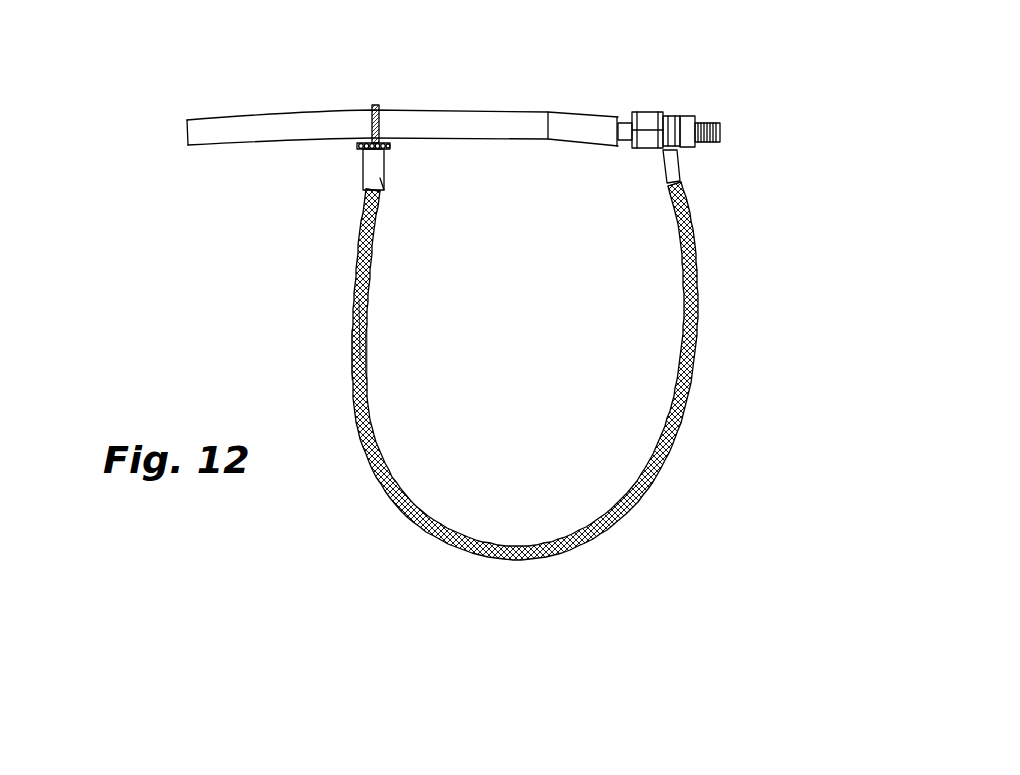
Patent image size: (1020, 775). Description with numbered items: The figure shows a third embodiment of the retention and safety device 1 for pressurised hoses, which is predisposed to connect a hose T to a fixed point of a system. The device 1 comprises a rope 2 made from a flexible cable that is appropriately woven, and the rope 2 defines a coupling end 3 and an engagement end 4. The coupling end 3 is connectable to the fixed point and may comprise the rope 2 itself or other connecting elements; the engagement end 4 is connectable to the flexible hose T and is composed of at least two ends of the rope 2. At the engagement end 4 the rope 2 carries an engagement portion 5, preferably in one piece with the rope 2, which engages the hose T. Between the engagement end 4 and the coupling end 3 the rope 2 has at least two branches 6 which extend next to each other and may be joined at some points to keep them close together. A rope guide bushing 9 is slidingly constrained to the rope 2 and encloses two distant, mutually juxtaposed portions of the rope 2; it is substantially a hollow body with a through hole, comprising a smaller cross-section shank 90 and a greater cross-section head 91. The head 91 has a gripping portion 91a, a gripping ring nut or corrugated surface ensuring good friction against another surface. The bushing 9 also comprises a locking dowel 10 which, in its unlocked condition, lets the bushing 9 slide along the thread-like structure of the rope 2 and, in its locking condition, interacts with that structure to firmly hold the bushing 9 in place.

The retention and safety device 1 is at (775, 122).
The hose T is at (510, 112).
The engagement portion 5 is at (378, 107).
The rope guide bushing 9 is at (345, 153).
The head 91 is at (388, 146).
The gripping portion 91a is at (362, 142).
The shank 90 is at (363, 176).
The locking dowel 10 is at (382, 178).
The rope 2 is at (617, 532).
The engagement end 4 is at (360, 242).
The branches 6 is at (366, 327).
The coupling end 3 is at (688, 248).